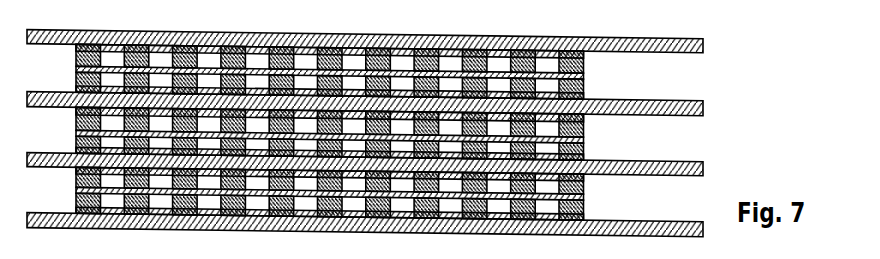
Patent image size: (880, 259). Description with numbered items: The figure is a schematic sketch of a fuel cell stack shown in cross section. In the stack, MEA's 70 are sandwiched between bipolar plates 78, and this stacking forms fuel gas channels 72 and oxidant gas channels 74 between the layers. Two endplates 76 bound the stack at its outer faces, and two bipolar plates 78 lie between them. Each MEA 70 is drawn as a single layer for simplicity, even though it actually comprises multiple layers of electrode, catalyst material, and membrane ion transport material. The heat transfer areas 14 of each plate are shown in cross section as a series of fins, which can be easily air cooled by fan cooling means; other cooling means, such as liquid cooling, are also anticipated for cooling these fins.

The heat transfer areas 14 is at (396, 118).
The MEA 70 is at (407, 167).
The fuel gas channels 72 is at (558, 35).
The oxidant gas channels 74 is at (583, 178).
The endplates 76 is at (34, 48).
The bipolar plates 78 is at (28, 107).